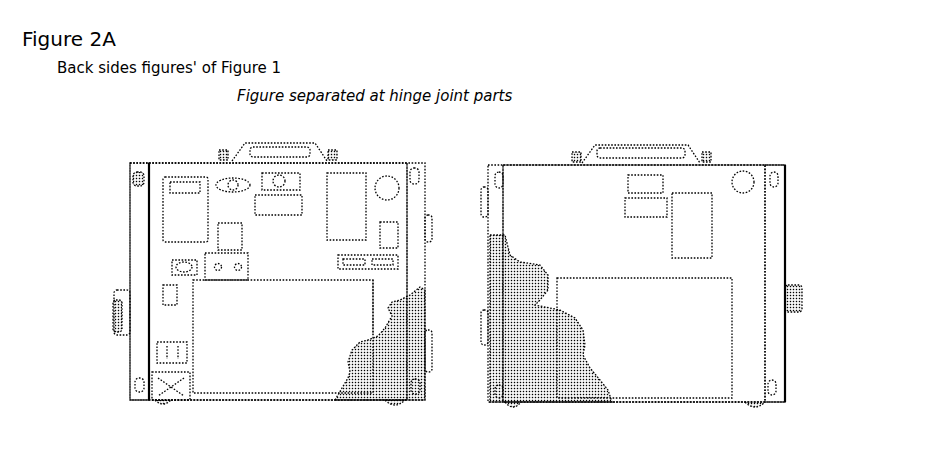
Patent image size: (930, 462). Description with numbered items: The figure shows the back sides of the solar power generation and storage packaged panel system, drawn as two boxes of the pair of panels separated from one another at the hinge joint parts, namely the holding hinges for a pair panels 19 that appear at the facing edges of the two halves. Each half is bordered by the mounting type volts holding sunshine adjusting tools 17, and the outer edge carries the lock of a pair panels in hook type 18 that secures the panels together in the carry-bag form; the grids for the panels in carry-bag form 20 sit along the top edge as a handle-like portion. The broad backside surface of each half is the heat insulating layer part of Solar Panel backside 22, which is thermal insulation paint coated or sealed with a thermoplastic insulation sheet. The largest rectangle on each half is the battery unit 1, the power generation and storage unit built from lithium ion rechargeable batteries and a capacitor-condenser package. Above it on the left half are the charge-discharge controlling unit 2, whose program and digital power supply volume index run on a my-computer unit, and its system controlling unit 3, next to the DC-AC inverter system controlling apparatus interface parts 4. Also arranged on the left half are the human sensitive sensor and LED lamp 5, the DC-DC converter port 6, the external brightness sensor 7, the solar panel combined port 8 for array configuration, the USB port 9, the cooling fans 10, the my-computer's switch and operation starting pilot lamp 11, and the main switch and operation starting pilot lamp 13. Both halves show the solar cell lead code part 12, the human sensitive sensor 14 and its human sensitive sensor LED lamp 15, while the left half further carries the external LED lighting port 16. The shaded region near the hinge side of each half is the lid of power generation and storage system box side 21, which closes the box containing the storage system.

The battery unit 1 is at (462, 338).
The charge-discharge controlling unit 2 is at (184, 196).
The system controlling unit 3 is at (185, 209).
The DC-AC inverter system controlling apparatus interface parts 4 is at (519, 215).
The human sensitive sensor and LED lamp 5 is at (172, 345).
The DC-DC converter port 6 is at (154, 296).
The external brightness sensor 7 is at (173, 267).
The solar panel combined port 8 is at (235, 266).
The USB port 9 is at (382, 307).
The cooling fans 10 is at (181, 394).
The my-computer's switch and operation starting pilot lamp 11 is at (229, 237).
The solar cell lead code part 12 is at (461, 208).
The main switch and operation starting pilot lamp 13 is at (398, 238).
The human sensitive sensor 14 is at (562, 192).
The human sensitive sensor LED lamp 15 is at (462, 183).
The external LED lighting port 16 is at (233, 197).
The mounting type volts holding sunshine adjusting tools 17 is at (449, 274).
The lock of a pair panels in hook type 18 is at (451, 300).
The holding hinges for a pair panels 19 is at (466, 279).
The grids for the panels in carry-bag form 20 is at (624, 146).
The lid of power generation and storage system box side 21 is at (473, 318).
The heat insulating layer part of solar panel backside 22 is at (457, 282).